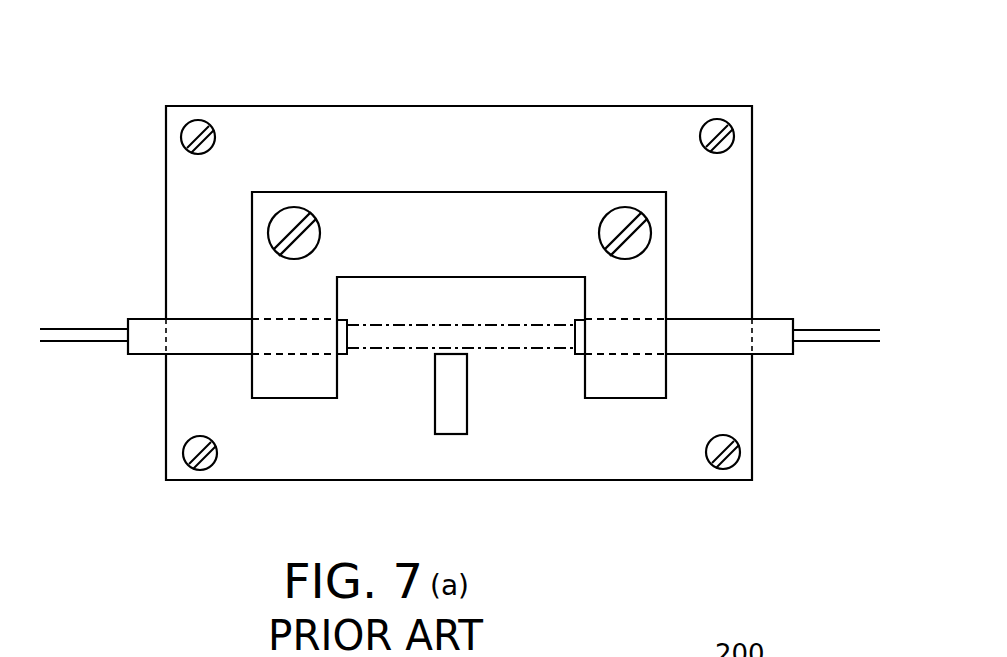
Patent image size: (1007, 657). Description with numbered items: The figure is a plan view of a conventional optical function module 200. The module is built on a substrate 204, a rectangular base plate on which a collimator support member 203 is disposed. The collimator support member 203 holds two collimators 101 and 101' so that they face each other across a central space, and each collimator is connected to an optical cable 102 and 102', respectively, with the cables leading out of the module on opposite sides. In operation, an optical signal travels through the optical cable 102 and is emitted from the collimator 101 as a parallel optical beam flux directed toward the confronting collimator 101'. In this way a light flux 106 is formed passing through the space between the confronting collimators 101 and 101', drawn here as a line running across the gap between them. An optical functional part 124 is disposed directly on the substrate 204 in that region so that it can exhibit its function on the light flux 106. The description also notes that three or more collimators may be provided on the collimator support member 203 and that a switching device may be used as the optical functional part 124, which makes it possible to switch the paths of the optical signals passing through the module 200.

The optical function module 200 is at (675, 83).
The substrate 204 is at (262, 106).
The collimator support member 203 is at (666, 251).
The light flux 106 is at (373, 350).
The optical functional part 124 is at (450, 435).
The collimator 101 is at (725, 310).
The collimator 101' is at (198, 296).
The optical cable 102 is at (841, 375).
The optical cable 102' is at (84, 375).